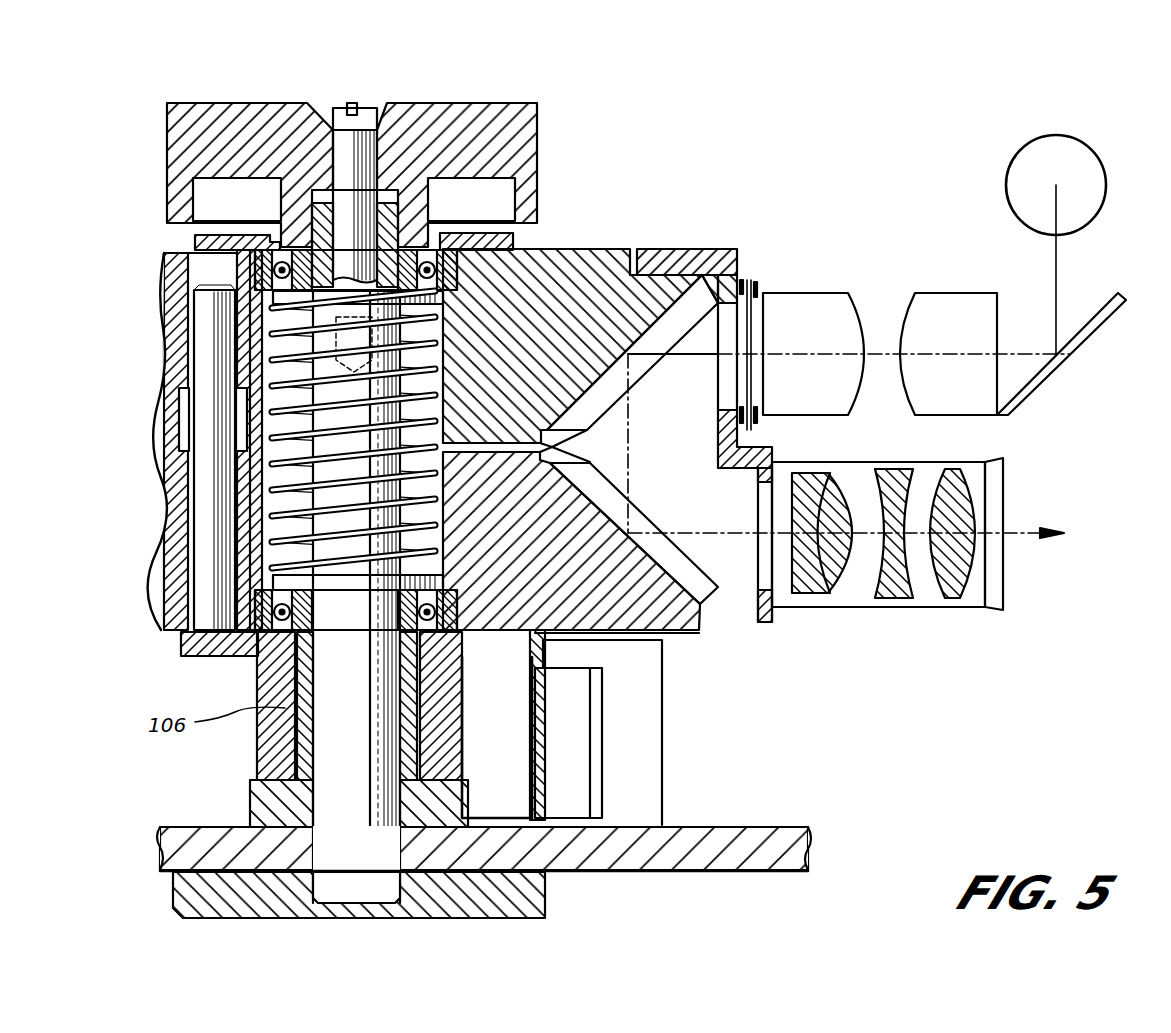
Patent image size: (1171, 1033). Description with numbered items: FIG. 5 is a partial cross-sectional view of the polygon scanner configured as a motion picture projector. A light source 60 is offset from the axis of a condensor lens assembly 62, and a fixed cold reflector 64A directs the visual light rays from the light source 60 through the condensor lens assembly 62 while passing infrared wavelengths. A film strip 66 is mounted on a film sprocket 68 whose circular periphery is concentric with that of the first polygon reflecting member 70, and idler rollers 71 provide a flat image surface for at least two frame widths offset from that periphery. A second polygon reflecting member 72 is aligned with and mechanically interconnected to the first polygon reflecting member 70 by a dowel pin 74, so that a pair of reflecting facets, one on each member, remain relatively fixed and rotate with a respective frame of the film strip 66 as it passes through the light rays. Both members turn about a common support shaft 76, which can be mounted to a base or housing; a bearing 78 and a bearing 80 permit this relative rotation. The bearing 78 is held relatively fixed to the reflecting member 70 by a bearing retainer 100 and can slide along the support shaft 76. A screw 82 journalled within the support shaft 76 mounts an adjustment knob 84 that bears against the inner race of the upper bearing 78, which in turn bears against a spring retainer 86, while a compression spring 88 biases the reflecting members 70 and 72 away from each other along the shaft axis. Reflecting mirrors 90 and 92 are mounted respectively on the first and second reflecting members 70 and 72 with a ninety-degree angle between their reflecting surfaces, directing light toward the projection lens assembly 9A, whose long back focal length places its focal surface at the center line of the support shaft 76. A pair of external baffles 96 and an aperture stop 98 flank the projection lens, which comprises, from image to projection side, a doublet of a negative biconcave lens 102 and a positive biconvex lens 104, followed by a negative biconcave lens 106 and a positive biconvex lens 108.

The light source 60 is at (1100, 141).
The condensor lens assembly 62 is at (932, 288).
The mirror 64A is at (1085, 352).
The film strip 66 is at (752, 302).
The film sprocket 68 is at (655, 252).
The first polygon reflecting member 70 is at (557, 275).
The idler rollers 71 is at (762, 422).
The second polygon reflecting member 72 is at (671, 612).
The dowel pin 74 is at (200, 410).
The common support shaft 76 is at (350, 742).
The bearing 78 is at (430, 248).
The bearing 80 is at (240, 660).
The screw 82 is at (325, 108).
The adjustment knob 84 is at (166, 118).
The spring retainer 86 is at (215, 325).
The compression spring 88 is at (290, 490).
The reflecting mirror 90 is at (600, 400).
The reflecting mirror 92 is at (612, 520).
The external baffles 96 is at (990, 580).
The aperture stop 98 is at (755, 582).
The bearing retainer 100 is at (198, 240).
The negative biconcave lens 102 is at (812, 595).
The positive biconvex lens 104 is at (855, 595).
The negative biconcave lens 106 is at (900, 598).
The positive biconvex lens 108 is at (975, 490).
The projection lens assembly 9A is at (928, 567).